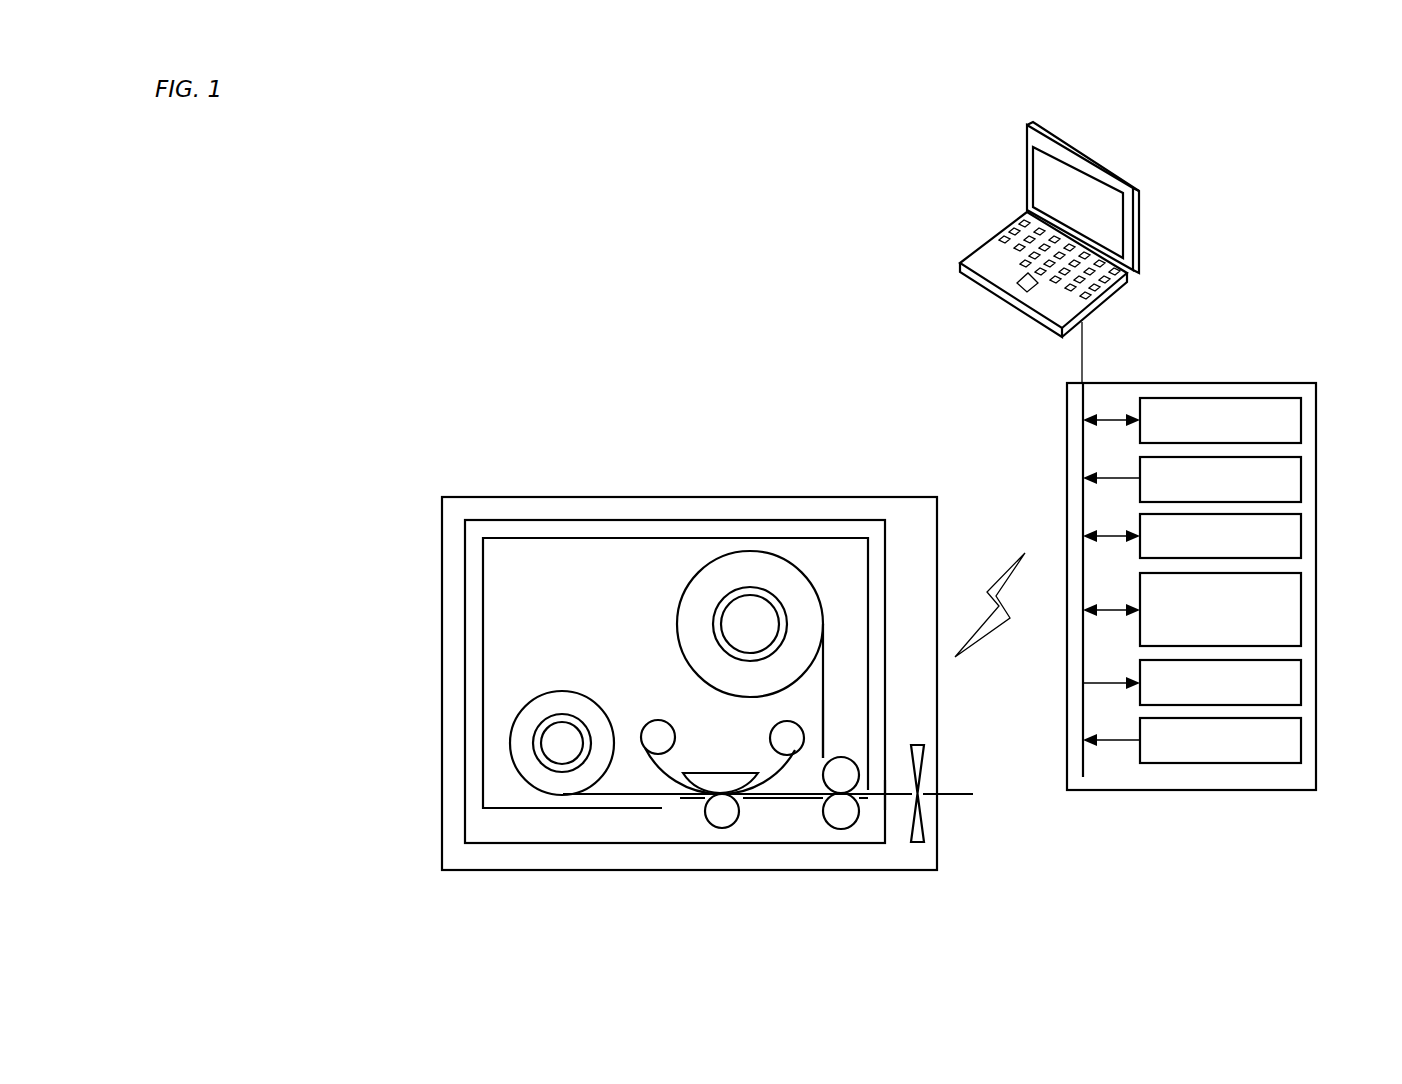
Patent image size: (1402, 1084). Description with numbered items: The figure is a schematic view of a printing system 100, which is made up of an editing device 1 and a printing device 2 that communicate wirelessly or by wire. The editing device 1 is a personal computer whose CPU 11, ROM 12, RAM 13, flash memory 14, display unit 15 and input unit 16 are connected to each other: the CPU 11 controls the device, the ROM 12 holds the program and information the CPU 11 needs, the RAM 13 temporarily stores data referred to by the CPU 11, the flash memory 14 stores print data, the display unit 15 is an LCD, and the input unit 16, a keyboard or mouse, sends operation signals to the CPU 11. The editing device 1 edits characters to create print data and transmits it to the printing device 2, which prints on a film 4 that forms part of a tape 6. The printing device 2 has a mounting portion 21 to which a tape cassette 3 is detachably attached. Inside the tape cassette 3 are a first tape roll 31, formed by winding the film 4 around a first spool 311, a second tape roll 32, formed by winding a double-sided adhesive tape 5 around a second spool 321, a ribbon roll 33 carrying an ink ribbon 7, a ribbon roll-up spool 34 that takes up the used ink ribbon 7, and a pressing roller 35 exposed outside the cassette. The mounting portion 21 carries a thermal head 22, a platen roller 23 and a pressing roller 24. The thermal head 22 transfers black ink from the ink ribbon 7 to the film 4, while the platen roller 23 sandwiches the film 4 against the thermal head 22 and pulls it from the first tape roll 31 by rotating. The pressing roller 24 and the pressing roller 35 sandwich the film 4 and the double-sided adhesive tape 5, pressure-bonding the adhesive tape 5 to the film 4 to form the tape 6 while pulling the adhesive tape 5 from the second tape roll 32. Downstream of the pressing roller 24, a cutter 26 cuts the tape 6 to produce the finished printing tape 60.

The printing system 100 is at (757, 196).
The editing device 1 is at (1103, 146).
The display unit 15 is at (1077, 187).
The input unit 16 is at (1018, 232).
The CPU 11 is at (1301, 418).
The ROM 12 is at (1301, 476).
The RAM 13 is at (1301, 534).
The flash memory 14 is at (1301, 609).
The printing device 2 is at (736, 452).
The mounting portion 21 is at (644, 520).
The tape cassette 3 is at (828, 533).
The second tape roll 32 is at (680, 584).
The second spool 321 is at (713, 626).
The first tape roll 31 is at (552, 679).
The first spool 311 is at (597, 709).
The ribbon roll 33 is at (672, 731).
The ribbon roll-up spool 34 is at (771, 743).
The ink ribbon 7 is at (762, 771).
The printing tape 60 is at (958, 793).
The platen roller 23 is at (722, 829).
The pressing roller 35 is at (835, 758).
The pressing roller 24 is at (841, 830).
The film 4 is at (637, 794).
The thermal head 22 is at (682, 769).
The tape 6 is at (886, 797).
The double-sided adhesive tape 5 is at (823, 710).
The cutter 26 is at (942, 833).